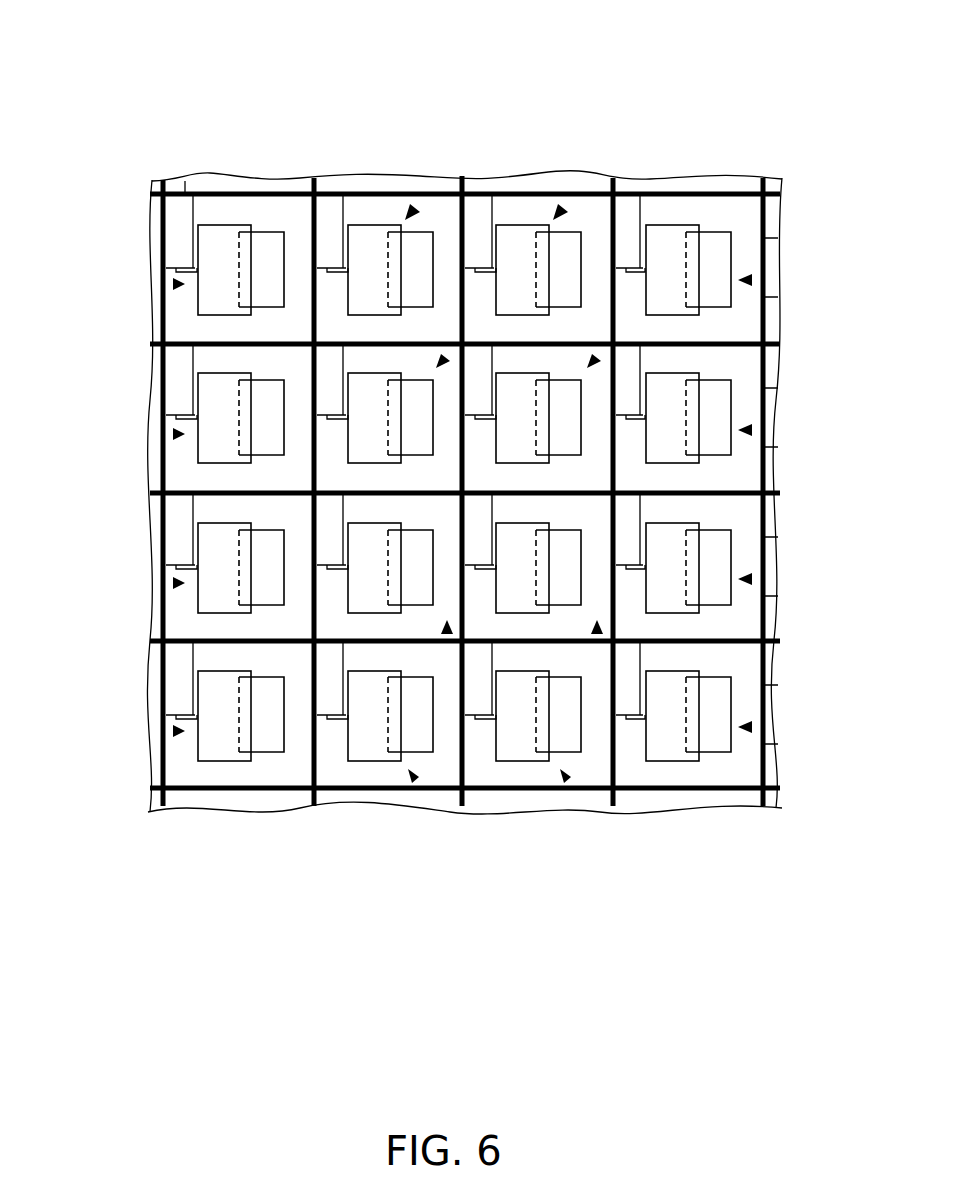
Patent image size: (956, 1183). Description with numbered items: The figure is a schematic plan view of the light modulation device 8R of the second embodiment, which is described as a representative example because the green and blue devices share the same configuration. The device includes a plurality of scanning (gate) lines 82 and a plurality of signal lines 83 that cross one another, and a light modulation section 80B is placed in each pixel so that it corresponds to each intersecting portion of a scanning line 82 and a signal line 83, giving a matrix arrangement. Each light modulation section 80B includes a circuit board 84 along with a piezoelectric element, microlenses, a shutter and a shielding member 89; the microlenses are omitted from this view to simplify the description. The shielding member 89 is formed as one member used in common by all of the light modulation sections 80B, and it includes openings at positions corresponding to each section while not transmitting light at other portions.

The light modulation device 8R is at (114, 86).
The shielding member 89 is at (195, 183).
The scanning (gate) line 82 is at (235, 194).
The signal line 83 is at (312, 228).
The circuit board 84 is at (328, 357).
The light modulation section 80B is at (408, 205).